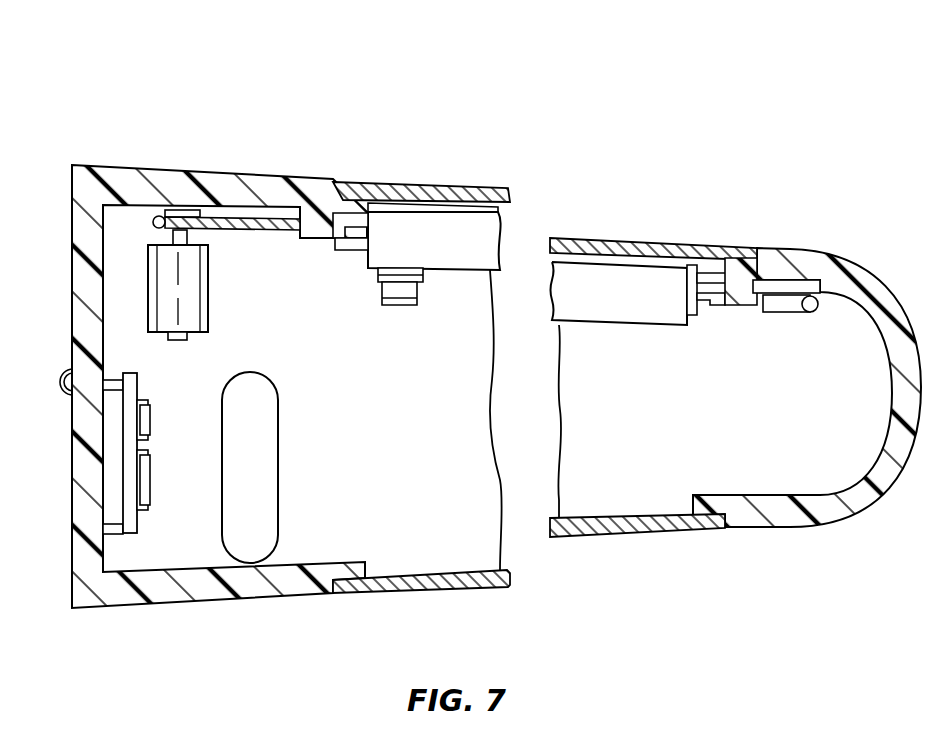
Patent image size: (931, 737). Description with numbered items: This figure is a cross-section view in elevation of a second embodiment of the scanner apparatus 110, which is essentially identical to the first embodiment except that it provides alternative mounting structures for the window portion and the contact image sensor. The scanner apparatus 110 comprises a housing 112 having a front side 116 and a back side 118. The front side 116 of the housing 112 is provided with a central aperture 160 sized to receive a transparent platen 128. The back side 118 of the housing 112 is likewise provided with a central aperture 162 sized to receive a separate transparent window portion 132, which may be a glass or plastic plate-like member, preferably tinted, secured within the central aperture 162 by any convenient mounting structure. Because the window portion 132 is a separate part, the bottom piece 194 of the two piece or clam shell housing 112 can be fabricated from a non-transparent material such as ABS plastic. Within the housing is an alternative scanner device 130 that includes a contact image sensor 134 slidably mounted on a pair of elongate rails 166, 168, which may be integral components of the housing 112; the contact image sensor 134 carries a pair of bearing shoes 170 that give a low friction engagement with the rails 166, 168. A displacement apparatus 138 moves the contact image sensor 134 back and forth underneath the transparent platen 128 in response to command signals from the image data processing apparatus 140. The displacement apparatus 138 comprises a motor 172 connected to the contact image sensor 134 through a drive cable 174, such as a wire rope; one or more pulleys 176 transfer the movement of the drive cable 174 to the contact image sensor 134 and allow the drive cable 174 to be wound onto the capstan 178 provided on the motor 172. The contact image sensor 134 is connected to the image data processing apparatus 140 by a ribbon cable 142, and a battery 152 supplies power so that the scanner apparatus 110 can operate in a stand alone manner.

The scanner apparatus 110 is at (269, 330).
The housing 112 is at (100, 160).
The front side 116 is at (750, 248).
The back side 118 is at (232, 603).
The transparent platen 128 is at (428, 183).
The scanner device 130 is at (355, 480).
The transparent window portion 132 is at (413, 593).
The contact image sensor 134 is at (620, 326).
The displacement apparatus 138 is at (214, 300).
The image data processing apparatus 140 is at (152, 418).
The ribbon cable 142 is at (398, 310).
The battery 152 is at (280, 397).
The central aperture 160 is at (340, 180).
The central aperture 162 is at (722, 523).
The elongate rail 166 is at (320, 247).
The elongate rail 168 is at (737, 310).
The bearing shoe 170 is at (350, 253).
The motor 172 is at (212, 332).
The drive cable 174 is at (243, 233).
The pulley 176 is at (793, 313).
The capstan 178 is at (153, 228).
The bottom piece 194 is at (813, 527).